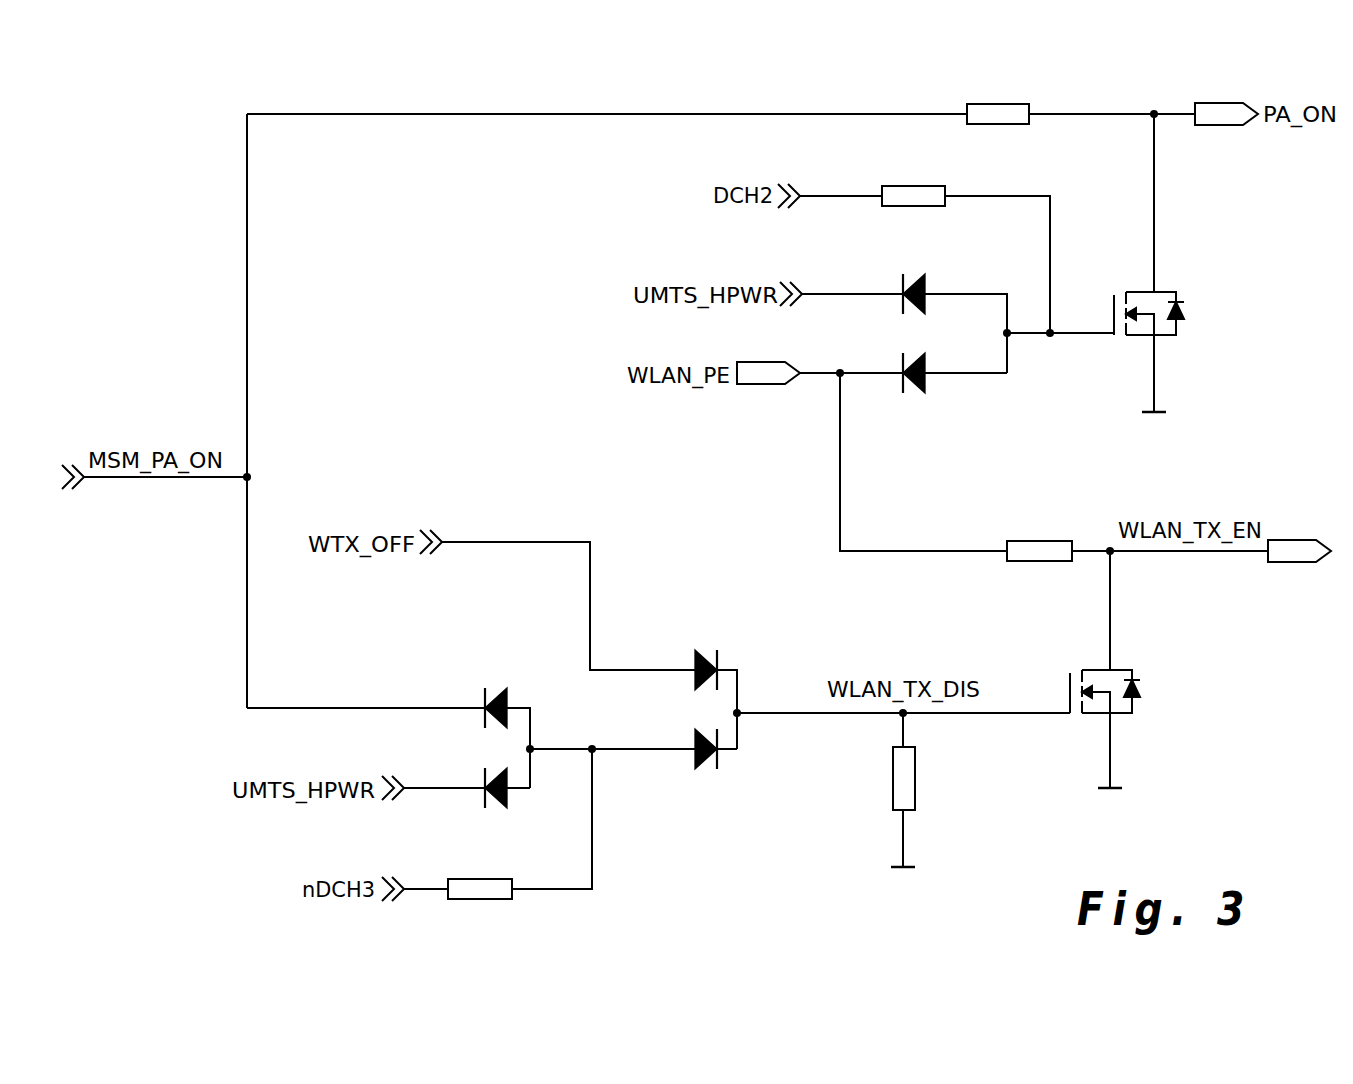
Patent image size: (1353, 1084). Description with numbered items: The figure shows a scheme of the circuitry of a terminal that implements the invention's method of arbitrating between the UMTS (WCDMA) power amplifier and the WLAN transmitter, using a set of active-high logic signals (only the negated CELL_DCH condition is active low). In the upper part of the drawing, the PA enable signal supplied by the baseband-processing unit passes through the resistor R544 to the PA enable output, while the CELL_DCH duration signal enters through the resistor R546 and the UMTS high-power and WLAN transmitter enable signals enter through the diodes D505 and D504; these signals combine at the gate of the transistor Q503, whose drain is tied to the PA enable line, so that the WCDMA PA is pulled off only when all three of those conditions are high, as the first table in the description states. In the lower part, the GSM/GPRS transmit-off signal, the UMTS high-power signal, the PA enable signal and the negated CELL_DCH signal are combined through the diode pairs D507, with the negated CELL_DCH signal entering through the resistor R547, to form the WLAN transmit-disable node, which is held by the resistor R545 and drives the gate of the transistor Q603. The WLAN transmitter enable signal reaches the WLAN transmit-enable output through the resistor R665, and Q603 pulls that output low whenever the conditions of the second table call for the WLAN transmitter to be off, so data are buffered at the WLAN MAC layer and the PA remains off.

The resistor R544 1k R544 is at (998, 117).
The resistor R546 18k R546 is at (913, 196).
The diode D505 1PS79SB10 D505 is at (921, 305).
The diode D504 1PS79SB10 D504 is at (921, 383).
The MOSFET transistor Q503 Si1032X Q503 is at (1173, 315).
The resistor R665 1k R665 is at (1039, 551).
The MOSFET transistor Q603 Si1032X Q603 is at (1139, 688).
The resistor R545 10K R545 is at (875, 778).
The dual diode D507 1PS89SS06/1PS89SS05 D507 is at (598, 728).
The resistor R547 2k2 R547 is at (480, 890).